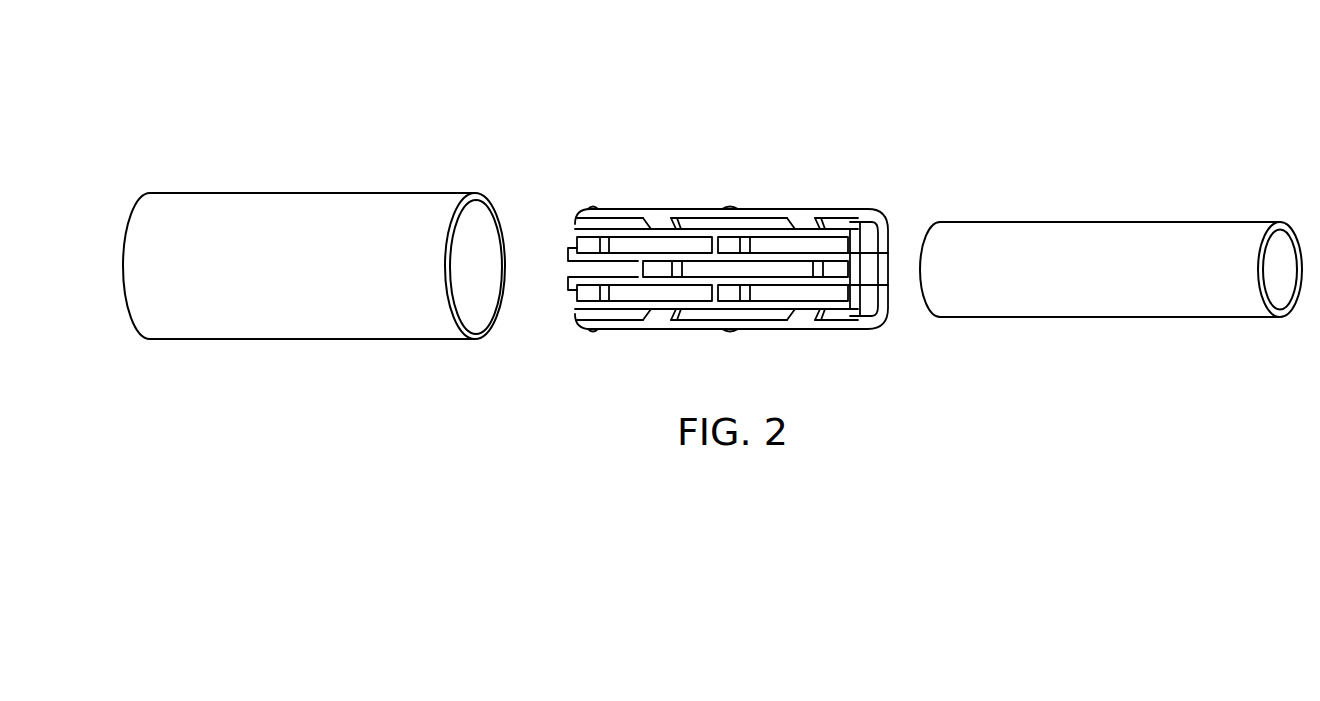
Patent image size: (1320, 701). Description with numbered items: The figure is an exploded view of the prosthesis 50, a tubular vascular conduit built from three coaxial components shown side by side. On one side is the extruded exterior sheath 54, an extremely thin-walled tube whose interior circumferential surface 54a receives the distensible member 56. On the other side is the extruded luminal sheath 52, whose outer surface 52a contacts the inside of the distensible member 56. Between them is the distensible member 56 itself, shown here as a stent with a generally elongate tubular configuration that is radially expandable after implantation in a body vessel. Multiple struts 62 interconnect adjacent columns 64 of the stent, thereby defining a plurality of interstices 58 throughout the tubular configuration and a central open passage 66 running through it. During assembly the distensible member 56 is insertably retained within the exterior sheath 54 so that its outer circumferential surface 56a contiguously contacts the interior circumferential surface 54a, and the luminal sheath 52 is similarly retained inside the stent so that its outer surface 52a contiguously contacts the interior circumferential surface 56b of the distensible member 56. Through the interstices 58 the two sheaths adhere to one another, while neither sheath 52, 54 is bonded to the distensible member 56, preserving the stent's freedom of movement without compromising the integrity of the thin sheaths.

The prosthesis 50 is at (1070, 83).
The luminal sheath 52 is at (1012, 222).
The outer surface of luminal sheath 52a is at (1236, 232).
The exterior sheath 54 is at (243, 193).
The interior circumferential surface of exterior sheath 54a is at (474, 306).
The distensible member 56 is at (743, 210).
The outer circumferential surface of distensible member 56a is at (827, 216).
The interior circumferential surface of distensible member 56b is at (880, 298).
The interstices 58 is at (667, 248).
The struts 62 is at (643, 268).
The columns 64 is at (575, 244).
The central open passage 66 is at (880, 255).